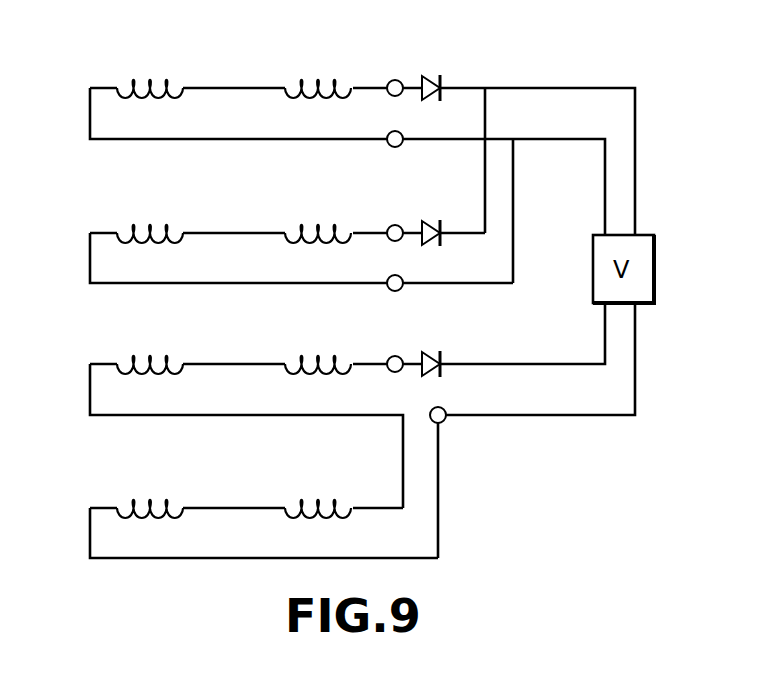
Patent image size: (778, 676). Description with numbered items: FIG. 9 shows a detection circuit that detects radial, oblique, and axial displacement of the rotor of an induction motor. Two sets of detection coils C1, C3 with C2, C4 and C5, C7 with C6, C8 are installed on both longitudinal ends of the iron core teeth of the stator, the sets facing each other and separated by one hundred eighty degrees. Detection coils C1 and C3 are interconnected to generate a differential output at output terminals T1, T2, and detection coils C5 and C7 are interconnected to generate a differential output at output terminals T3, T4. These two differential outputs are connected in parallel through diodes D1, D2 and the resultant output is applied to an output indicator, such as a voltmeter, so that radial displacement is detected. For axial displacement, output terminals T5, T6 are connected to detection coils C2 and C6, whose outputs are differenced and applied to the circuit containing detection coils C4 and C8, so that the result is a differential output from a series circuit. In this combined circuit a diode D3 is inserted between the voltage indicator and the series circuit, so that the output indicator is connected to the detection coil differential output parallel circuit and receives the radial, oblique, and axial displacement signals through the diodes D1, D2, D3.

The detection coil C1 is at (150, 86).
The detection coil C2 is at (150, 362).
The detection coil C3 is at (318, 86).
The detection coil C4 is at (152, 506).
The detection coil C5 is at (150, 231).
The detection coil C6 is at (318, 362).
The detection coil C7 is at (318, 231).
The detection coil C8 is at (320, 506).
The output terminal T1 is at (397, 80).
The output terminal T2 is at (392, 150).
The output terminal T3 is at (393, 225).
The output terminal T4 is at (392, 294).
The output terminal T5 is at (395, 356).
The output terminal T6 is at (443, 423).
The diode D1 is at (428, 77).
The diode D2 is at (430, 223).
The diode D3 is at (432, 353).